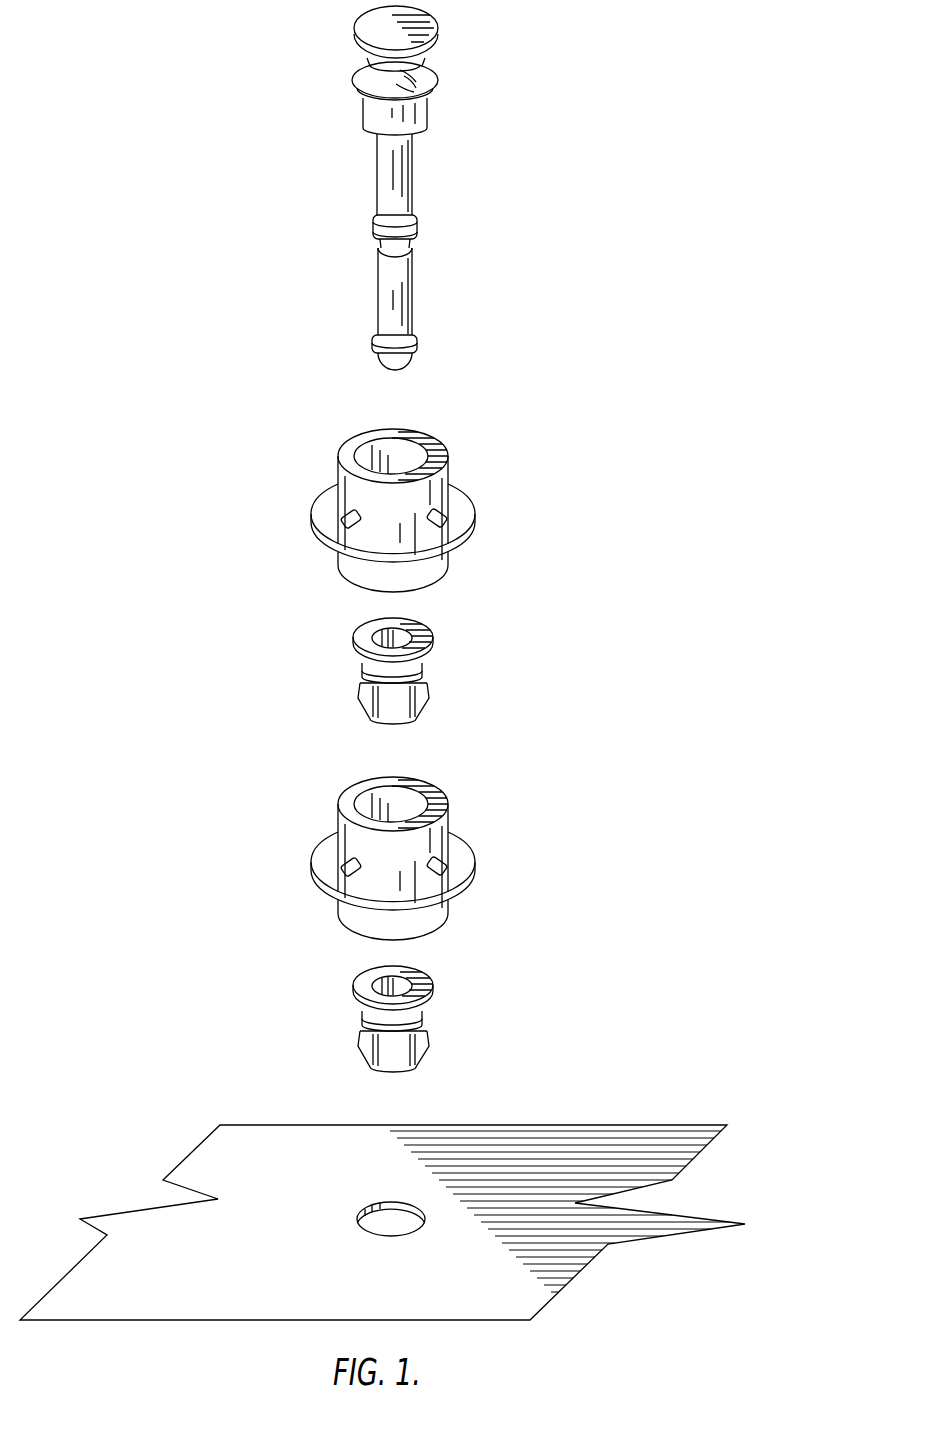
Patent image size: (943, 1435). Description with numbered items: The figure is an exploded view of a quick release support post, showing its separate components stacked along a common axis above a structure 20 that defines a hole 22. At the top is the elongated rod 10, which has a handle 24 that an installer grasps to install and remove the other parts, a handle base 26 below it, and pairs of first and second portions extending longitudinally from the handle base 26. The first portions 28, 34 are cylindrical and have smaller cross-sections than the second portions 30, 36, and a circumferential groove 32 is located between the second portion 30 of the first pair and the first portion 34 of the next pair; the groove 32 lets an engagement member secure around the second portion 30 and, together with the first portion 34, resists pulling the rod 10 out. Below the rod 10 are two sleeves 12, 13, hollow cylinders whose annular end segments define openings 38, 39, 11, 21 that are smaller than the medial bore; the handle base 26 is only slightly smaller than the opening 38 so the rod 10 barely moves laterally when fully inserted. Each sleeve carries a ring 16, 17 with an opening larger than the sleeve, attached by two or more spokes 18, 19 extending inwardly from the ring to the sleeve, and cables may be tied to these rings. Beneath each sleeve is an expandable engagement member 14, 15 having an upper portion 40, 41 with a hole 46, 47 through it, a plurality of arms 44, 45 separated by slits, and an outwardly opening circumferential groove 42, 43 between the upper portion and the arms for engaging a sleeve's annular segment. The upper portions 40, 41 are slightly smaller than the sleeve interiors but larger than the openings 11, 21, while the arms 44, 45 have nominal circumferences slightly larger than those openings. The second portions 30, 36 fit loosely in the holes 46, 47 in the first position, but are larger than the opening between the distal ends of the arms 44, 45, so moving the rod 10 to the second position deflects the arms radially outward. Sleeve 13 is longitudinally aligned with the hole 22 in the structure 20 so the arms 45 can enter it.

The elongated rod 10 is at (508, 189).
The handle 24 is at (430, 60).
The handle base 26 is at (420, 108).
The first portion 28 is at (410, 196).
The second portion 30 is at (412, 235).
The circumferential groove 32 is at (407, 248).
The first portion 34 is at (408, 304).
The second portion 36 is at (437, 353).
The sleeve 12 is at (441, 527).
The opening 38 is at (400, 457).
The spokes 18 is at (437, 515).
The ring 16 is at (472, 528).
The opening 11 is at (377, 602).
The expandable engagement member 14 is at (508, 663).
The hole 46 is at (403, 640).
The upper portion 40 is at (433, 647).
The circumferential groove 42 is at (427, 663).
The arms 44 is at (445, 712).
The sleeve 13 is at (461, 877).
The opening 39 is at (447, 803).
The spokes 19 is at (448, 854).
The ring 17 is at (434, 873).
The opening 21 is at (353, 946).
The expandable engagement member 15 is at (508, 1026).
The hole 47 is at (441, 972).
The upper portion 41 is at (431, 994).
The circumferential groove 43 is at (436, 1037).
The arms 45 is at (434, 1066).
The structure 20 is at (426, 1222).
The hole 22 is at (403, 1220).